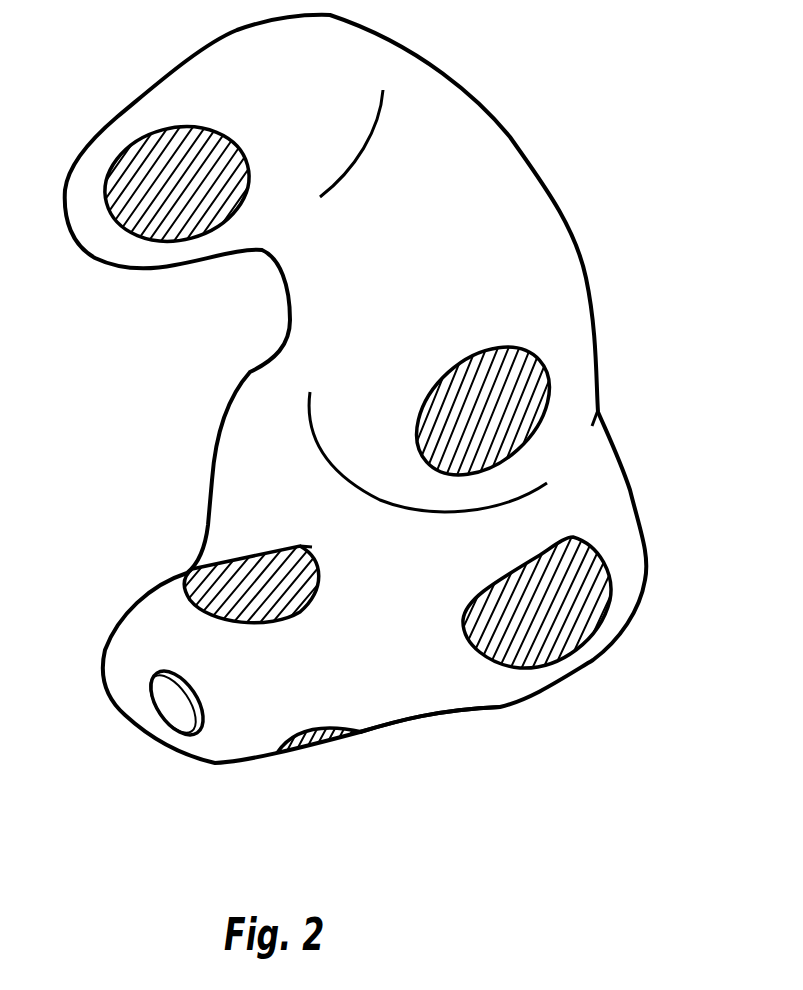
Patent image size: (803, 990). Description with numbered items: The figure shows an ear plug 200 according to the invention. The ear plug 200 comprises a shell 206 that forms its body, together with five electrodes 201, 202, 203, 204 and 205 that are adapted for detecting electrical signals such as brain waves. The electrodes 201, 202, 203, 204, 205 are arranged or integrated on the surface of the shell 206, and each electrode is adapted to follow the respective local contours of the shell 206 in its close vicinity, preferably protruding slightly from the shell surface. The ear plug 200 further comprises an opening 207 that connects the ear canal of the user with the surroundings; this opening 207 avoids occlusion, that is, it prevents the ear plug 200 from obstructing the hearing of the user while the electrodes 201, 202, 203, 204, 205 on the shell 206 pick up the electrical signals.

The ear plug 200 is at (523, 118).
The electrode 201 is at (178, 232).
The electrode 202 is at (545, 378).
The electrode 203 is at (570, 643).
The electrode 204 is at (245, 560).
The electrode 205 is at (312, 748).
The shell 206 is at (437, 697).
The opening 207 is at (172, 700).